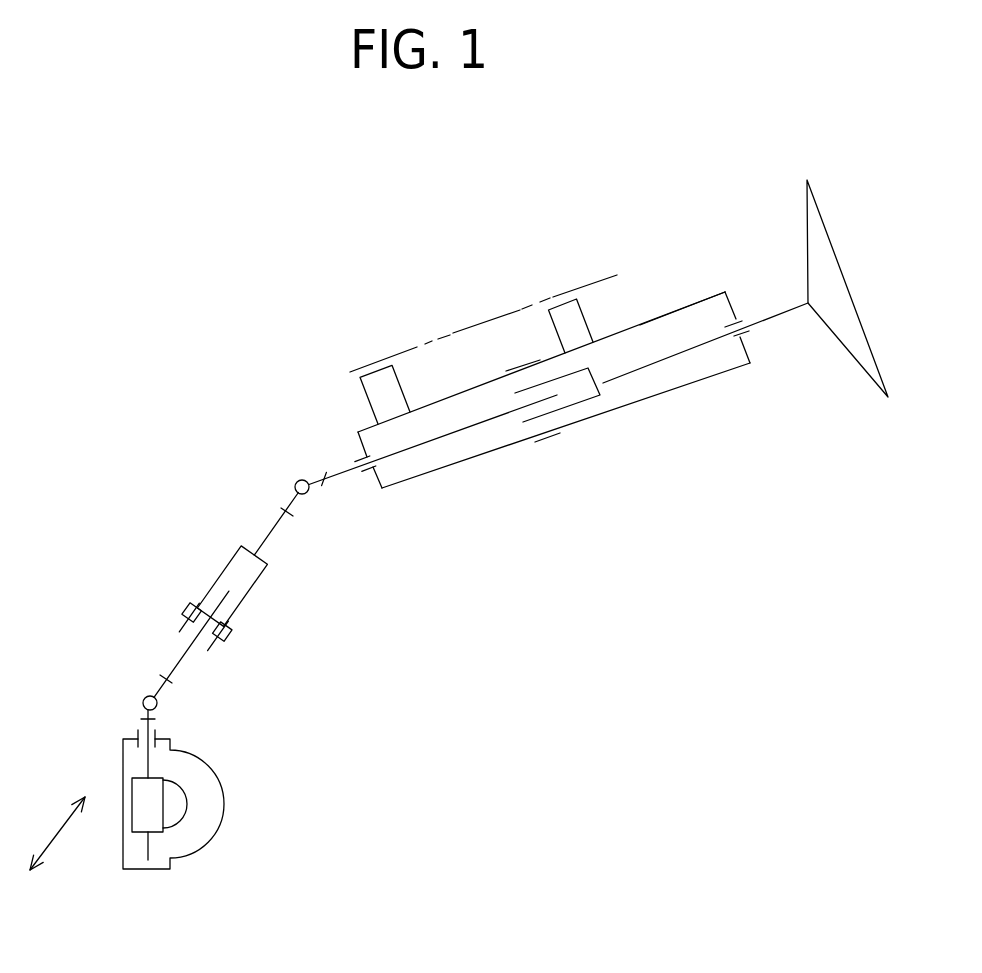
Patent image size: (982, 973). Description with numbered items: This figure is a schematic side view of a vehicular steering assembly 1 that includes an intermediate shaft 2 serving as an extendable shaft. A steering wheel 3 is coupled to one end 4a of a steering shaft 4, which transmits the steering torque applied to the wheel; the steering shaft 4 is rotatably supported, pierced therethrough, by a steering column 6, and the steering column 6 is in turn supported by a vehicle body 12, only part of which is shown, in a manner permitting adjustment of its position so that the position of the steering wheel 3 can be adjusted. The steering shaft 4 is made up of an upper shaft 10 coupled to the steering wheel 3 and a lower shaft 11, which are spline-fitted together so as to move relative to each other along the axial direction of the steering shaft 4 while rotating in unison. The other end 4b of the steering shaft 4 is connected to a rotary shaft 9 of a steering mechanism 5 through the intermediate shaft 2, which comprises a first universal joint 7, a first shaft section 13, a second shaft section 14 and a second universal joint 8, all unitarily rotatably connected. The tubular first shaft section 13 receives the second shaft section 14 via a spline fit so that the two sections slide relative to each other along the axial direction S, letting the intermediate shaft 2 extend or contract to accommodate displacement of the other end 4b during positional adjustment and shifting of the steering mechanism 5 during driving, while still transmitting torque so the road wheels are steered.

The vehicular steering assembly 1 is at (217, 387).
The intermediate shaft 2 is at (153, 532).
The steering wheel 3 is at (866, 369).
The steering shaft 4 is at (537, 393).
The one end 4a is at (787, 310).
The other end 4b is at (337, 472).
The steering mechanism 5 is at (228, 804).
The steering column 6 is at (677, 313).
The first universal joint 7 is at (310, 494).
The second universal joint 8 is at (158, 703).
The rotary shaft 9 is at (140, 718).
The upper shaft 10 is at (653, 395).
The lower shaft 11 is at (470, 426).
The vehicle body 12 is at (592, 283).
The first shaft section 13 is at (255, 587).
The second shaft section 14 is at (182, 657).
The axial direction S is at (62, 838).